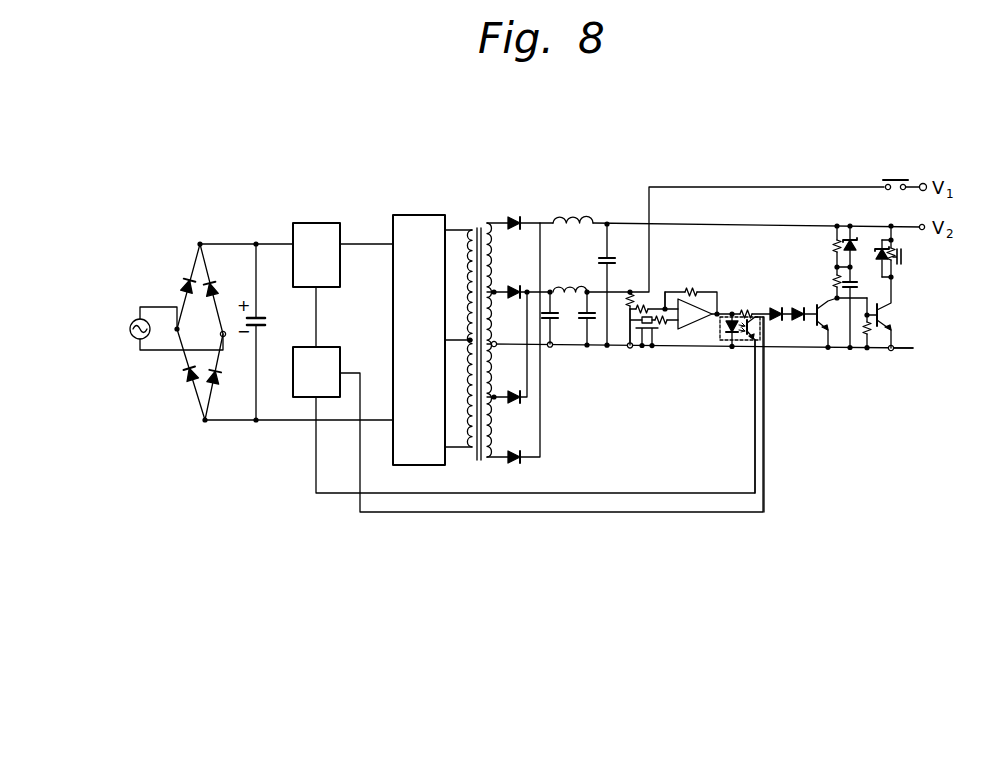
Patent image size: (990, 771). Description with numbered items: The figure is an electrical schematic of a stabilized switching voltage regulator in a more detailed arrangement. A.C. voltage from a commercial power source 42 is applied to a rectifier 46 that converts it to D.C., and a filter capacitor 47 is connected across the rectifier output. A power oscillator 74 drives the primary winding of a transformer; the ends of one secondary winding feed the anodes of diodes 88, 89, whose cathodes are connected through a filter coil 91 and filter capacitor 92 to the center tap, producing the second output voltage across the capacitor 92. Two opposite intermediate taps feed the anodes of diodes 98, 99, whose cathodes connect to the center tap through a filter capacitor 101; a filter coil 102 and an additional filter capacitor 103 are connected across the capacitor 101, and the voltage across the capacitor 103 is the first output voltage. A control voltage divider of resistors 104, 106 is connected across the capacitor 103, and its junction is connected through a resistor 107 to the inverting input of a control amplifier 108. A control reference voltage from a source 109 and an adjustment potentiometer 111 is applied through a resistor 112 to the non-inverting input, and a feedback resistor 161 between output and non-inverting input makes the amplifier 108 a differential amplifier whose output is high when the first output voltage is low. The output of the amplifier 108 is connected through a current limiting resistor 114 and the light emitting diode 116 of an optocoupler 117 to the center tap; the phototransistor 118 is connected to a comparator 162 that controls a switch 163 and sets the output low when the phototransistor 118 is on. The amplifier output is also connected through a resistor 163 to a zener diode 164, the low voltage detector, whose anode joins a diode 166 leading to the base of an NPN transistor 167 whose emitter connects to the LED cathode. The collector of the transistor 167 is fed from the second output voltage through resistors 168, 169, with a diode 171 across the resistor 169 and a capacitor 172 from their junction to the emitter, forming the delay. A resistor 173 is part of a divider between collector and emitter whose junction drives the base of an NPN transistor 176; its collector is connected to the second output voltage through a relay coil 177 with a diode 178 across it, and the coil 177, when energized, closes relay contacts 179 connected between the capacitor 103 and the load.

The commercial power source 42 is at (131, 337).
The rectifier 46 is at (191, 272).
The filter capacitor 47 is at (266, 325).
The power oscillator 74 is at (410, 214).
The diode 88 is at (513, 215).
The diode 89 is at (515, 464).
The filter coil 91 is at (574, 213).
The filter capacitor 92 is at (628, 258).
The diode 98 is at (513, 285).
The diode 99 is at (513, 404).
The filter capacitor 101 is at (562, 351).
The filter coil 102 is at (568, 283).
The filter capacitor 103 is at (562, 347).
The resistor 104 is at (633, 300).
The resistor 106 is at (627, 348).
The resistor 107 is at (642, 307).
The control amplifier 108 is at (692, 328).
The control reference voltage source 109 is at (599, 347).
The adjustment potentiometer 111 is at (643, 348).
The resistor 112 is at (653, 349).
The current limiting resistor 114 is at (683, 351).
The light emitting diode 116 is at (722, 341).
The optocoupler 117 is at (748, 342).
The phototransistor 118 is at (752, 352).
The feedback resistor 161 is at (700, 292).
The comparator 162 is at (303, 399).
The switch 163 is at (312, 222).
The zener diode 164 is at (787, 348).
The diode 166 is at (797, 348).
The NPN transistor 167 is at (809, 328).
The resistor 168 is at (832, 284).
The resistor 169 is at (832, 250).
The diode 171 is at (848, 235).
The capacitor 172 is at (862, 284).
The resistor 173 is at (870, 307).
The NPN transistor 176 is at (893, 320).
The relay coil 177 is at (903, 257).
The diode 178 is at (881, 248).
The relay contacts 179 is at (892, 178).